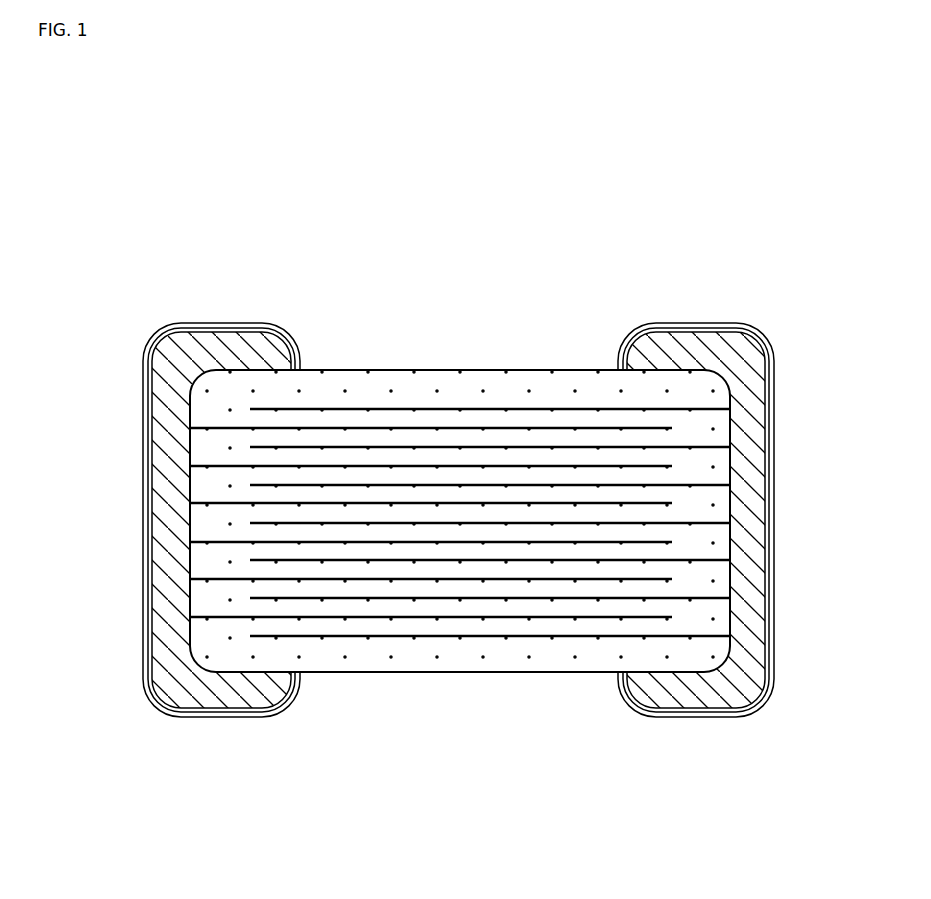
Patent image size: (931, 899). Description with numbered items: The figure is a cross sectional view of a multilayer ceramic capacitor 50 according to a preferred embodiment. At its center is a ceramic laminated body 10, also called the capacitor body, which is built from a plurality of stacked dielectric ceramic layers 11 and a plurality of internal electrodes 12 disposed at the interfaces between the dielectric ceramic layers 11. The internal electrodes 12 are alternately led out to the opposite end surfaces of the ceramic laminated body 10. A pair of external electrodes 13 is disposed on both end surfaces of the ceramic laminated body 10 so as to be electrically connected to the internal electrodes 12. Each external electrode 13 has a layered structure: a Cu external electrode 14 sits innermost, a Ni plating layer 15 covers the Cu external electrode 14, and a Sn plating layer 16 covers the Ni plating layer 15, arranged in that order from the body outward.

The multilayer ceramic capacitor 50 is at (568, 295).
The ceramic laminated body 10 is at (471, 368).
The dielectric ceramic layer 11 is at (361, 528).
The internal electrode 12 is at (383, 466).
The external electrode 13 is at (181, 326).
The Cu external electrode 14 is at (183, 458).
The Ni plating layer 15 is at (192, 718).
The Sn plating layer 16 is at (238, 718).